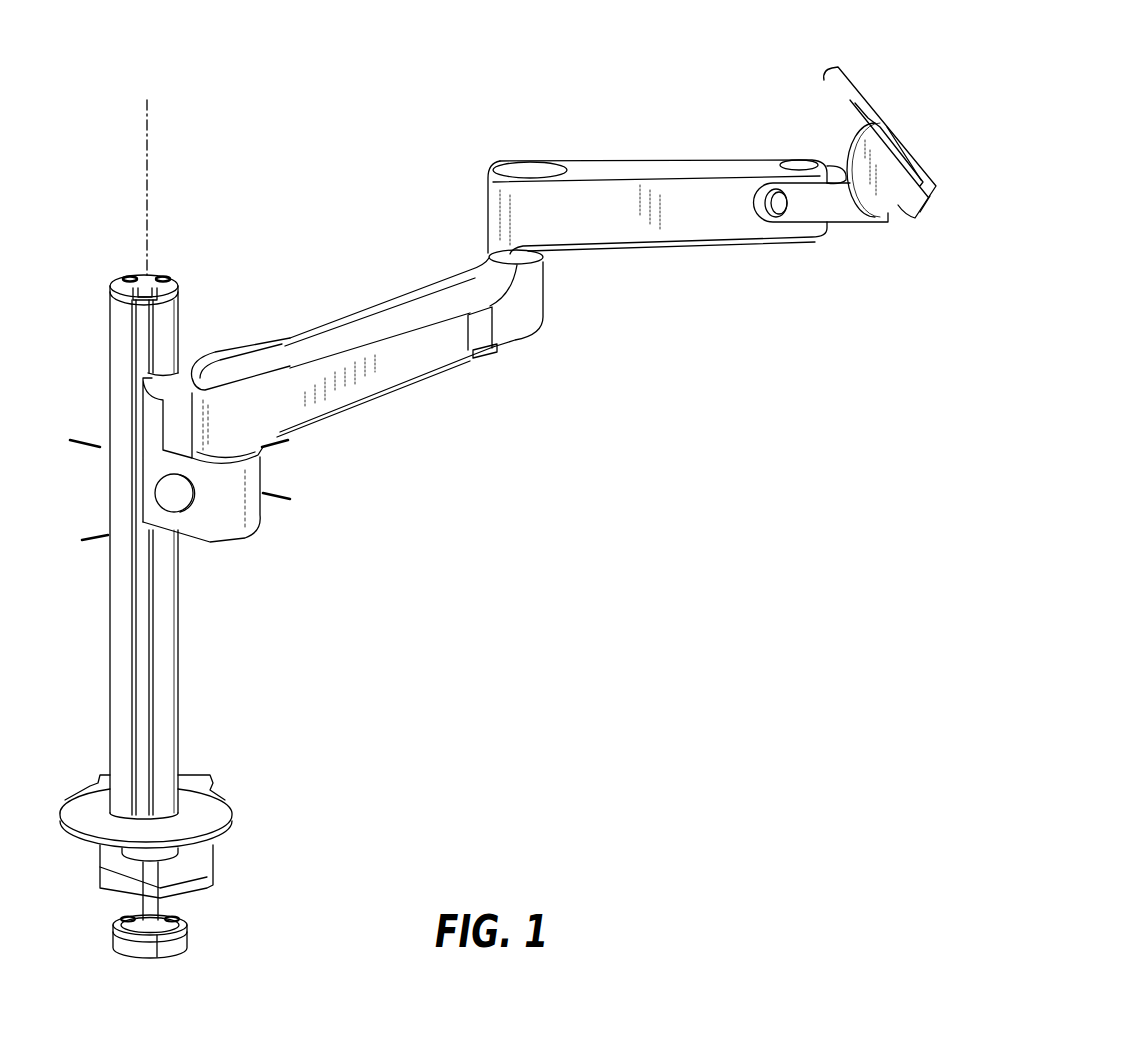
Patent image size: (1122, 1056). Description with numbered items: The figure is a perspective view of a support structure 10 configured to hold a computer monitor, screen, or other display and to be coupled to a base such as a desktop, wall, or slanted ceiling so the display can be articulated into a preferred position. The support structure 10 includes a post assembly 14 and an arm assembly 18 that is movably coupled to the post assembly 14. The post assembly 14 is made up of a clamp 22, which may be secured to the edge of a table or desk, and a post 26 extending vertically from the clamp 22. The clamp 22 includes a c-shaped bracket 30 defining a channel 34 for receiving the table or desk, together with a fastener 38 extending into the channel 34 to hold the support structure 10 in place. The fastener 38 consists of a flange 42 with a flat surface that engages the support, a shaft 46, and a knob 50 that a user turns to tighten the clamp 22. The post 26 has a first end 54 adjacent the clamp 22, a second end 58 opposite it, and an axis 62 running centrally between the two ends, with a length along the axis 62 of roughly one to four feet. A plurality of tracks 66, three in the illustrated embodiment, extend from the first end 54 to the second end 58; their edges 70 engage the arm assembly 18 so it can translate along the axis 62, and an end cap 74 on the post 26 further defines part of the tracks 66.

The support structure 10 is at (93, 195).
The post assembly 14 is at (68, 697).
The arm assembly 18 is at (452, 162).
The clamp 22 is at (248, 836).
The post 26 is at (165, 635).
The c-shaped bracket 30 is at (210, 808).
The channel 34 is at (82, 858).
The fastener 38 is at (190, 945).
The flange 42 is at (160, 855).
The shaft 46 is at (150, 878).
The knob 50 is at (150, 950).
The first end 54 is at (68, 780).
The second end 58 is at (70, 307).
The axis 62 is at (150, 160).
The tracks 66 is at (126, 277).
The edges 70 is at (132, 682).
The end cap 74 is at (150, 275).